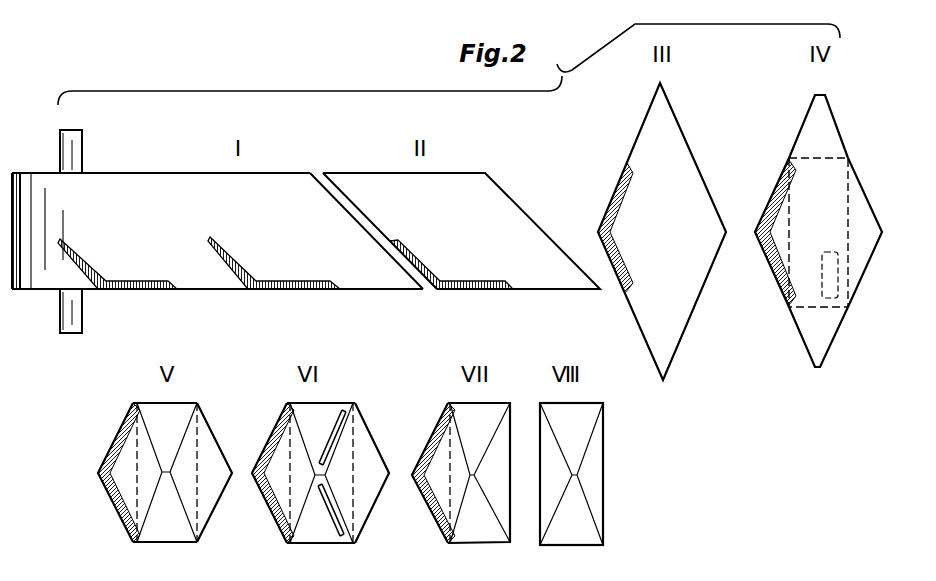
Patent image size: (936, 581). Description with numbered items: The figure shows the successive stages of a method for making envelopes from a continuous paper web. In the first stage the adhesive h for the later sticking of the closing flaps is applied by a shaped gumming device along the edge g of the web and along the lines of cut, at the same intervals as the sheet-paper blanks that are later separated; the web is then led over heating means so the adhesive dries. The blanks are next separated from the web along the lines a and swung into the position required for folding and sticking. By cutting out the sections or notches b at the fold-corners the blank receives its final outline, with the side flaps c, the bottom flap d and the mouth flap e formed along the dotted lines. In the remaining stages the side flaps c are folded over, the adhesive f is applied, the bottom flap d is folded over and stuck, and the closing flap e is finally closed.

The lines of cut a is at (365, 233).
The sections or notches of the fold-corners b is at (789, 158).
The side flaps c is at (825, 95).
The bottom flap d is at (868, 222).
The mouth flap e is at (778, 243).
The adhesive f is at (335, 438).
The edge g is at (212, 292).
The adhesive h is at (107, 275).